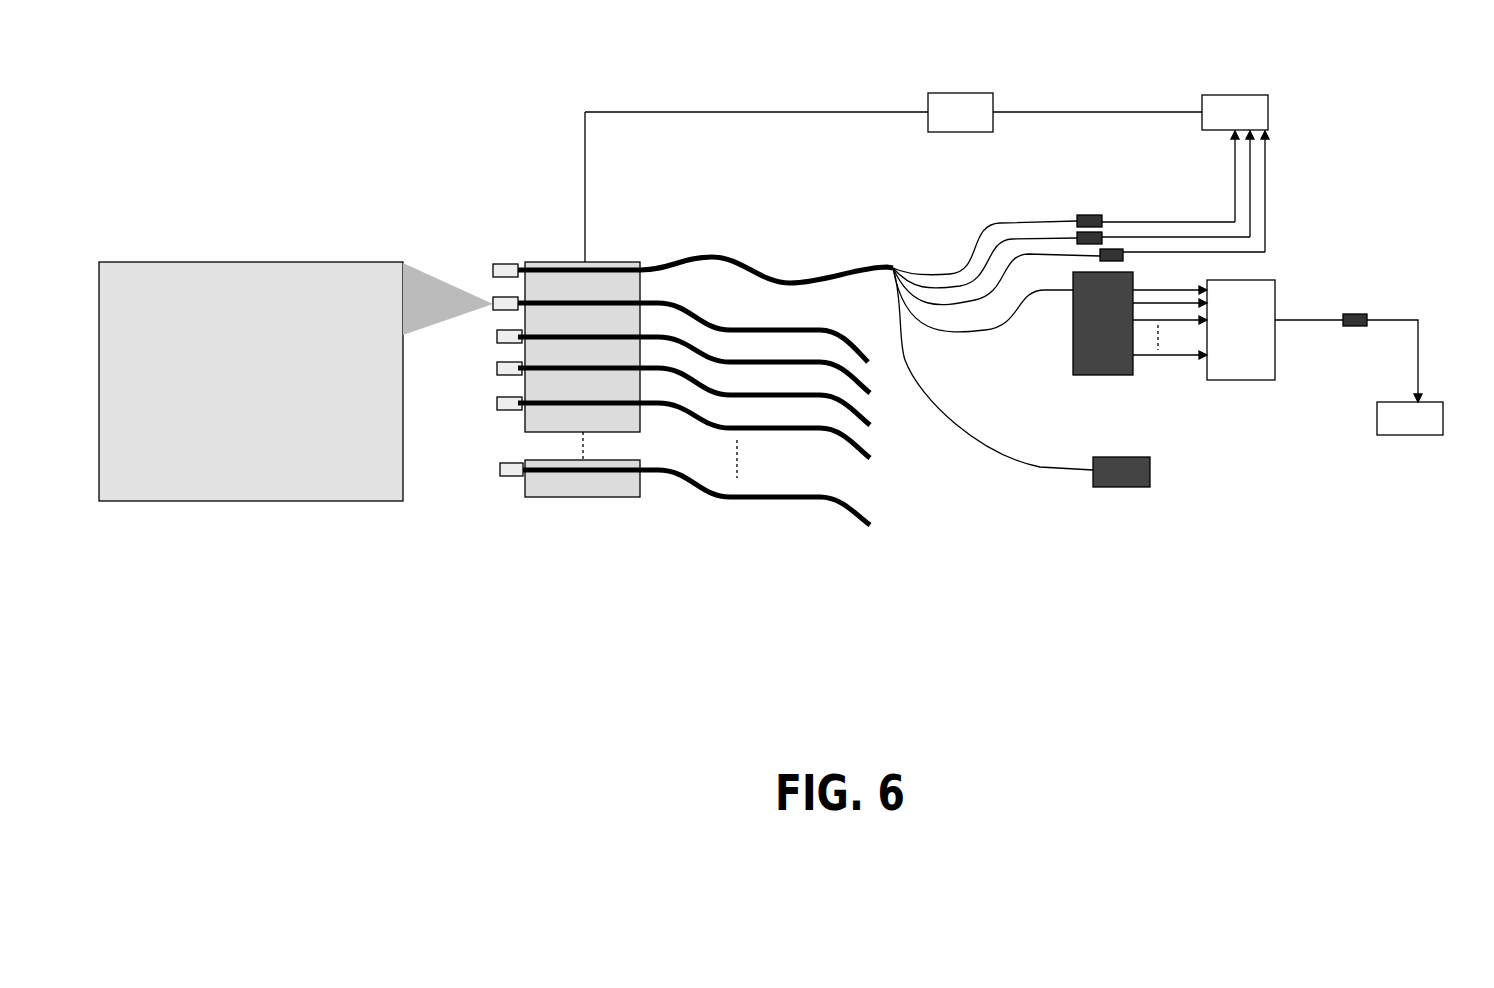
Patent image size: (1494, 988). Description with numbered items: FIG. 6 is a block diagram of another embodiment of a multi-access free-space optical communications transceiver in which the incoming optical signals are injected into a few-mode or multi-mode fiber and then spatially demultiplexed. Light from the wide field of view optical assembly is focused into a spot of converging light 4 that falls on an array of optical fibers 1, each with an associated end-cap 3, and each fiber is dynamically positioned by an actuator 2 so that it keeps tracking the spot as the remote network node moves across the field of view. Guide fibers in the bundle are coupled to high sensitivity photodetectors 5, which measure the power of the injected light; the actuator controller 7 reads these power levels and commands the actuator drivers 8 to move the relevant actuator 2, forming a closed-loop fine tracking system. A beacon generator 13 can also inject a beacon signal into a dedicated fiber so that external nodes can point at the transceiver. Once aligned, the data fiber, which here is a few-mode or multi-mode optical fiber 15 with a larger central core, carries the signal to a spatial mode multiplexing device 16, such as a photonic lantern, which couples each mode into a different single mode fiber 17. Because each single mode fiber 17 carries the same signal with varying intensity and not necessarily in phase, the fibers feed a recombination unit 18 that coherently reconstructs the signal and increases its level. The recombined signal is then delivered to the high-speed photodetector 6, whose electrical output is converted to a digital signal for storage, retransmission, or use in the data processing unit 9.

The optical fiber 1 is at (708, 493).
The actuator 2 is at (598, 490).
The end-cap 3 is at (505, 477).
The converging light 4 is at (452, 287).
The high sensitivity photodetector 5 is at (1098, 214).
The high-speed photodetector 6 is at (1355, 316).
The actuator controller 7 is at (1265, 110).
The actuator driver 8 is at (975, 103).
The data processing unit 9 is at (1420, 428).
The beacon generator 13 is at (1120, 490).
The optical fiber 15 is at (950, 333).
The spatial mode multiplexing device 16 is at (1093, 377).
The single mode fiber 17 is at (1165, 355).
The recombination unit 18 is at (1263, 357).